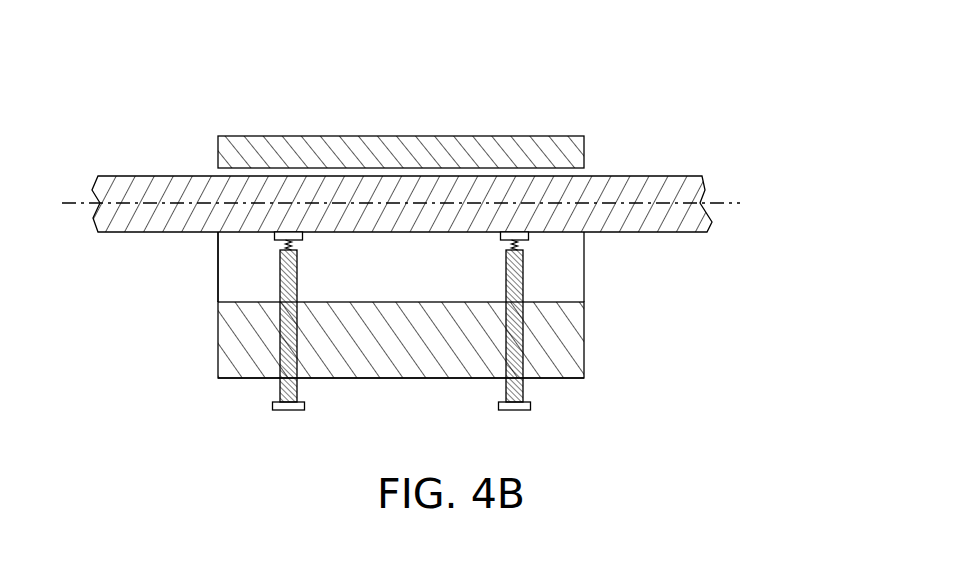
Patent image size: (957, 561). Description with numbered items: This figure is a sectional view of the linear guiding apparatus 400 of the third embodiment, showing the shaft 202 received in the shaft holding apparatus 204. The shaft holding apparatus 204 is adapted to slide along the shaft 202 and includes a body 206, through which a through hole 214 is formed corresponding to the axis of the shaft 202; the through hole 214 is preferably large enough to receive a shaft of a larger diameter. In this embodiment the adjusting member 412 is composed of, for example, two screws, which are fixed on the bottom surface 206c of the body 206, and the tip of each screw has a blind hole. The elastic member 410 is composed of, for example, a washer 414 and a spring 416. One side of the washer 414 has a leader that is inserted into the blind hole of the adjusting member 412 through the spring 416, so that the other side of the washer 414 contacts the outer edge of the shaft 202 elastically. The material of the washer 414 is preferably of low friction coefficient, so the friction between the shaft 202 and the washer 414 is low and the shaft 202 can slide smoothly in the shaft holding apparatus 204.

The linear guiding apparatus 400 is at (750, 63).
The shaft 202 is at (630, 176).
The through hole 214 is at (242, 262).
The shaft holding apparatus 204 is at (491, 337).
The body 206 is at (584, 355).
The bottom surface 206c is at (402, 378).
The elastic member 410 is at (492, 257).
The adjusting member 412 is at (523, 287).
The washer 414 is at (530, 235).
The spring 416 is at (530, 245).